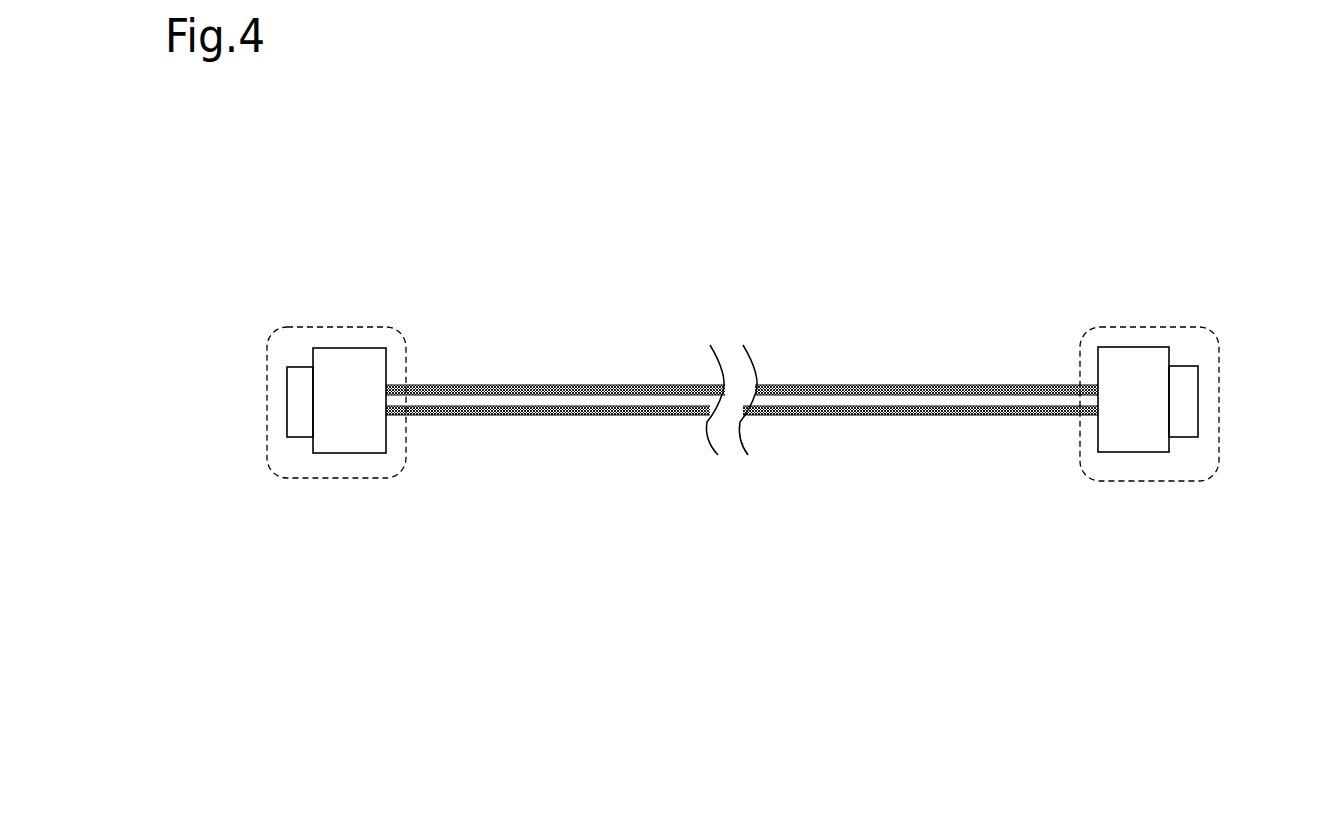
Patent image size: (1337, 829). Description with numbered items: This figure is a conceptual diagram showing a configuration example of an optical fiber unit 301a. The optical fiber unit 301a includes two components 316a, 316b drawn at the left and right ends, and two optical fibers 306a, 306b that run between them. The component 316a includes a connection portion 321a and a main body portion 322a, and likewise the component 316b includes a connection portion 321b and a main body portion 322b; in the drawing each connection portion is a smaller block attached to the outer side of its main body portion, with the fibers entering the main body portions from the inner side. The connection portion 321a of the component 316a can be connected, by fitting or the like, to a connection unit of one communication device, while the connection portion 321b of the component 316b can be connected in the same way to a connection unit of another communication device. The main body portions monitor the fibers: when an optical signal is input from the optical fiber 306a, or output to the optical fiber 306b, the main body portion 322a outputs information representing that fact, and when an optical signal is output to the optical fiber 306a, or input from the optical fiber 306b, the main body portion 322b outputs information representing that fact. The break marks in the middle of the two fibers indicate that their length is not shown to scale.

The optical fiber unit 301a is at (535, 166).
The component 316a is at (277, 332).
The component 316b is at (1192, 327).
The main body portion 322a is at (365, 363).
The main body portion 322b is at (1127, 363).
The connection portion 321a is at (293, 413).
The connection portion 321b is at (1220, 508).
The optical fiber 306a is at (821, 385).
The optical fiber 306b is at (817, 415).